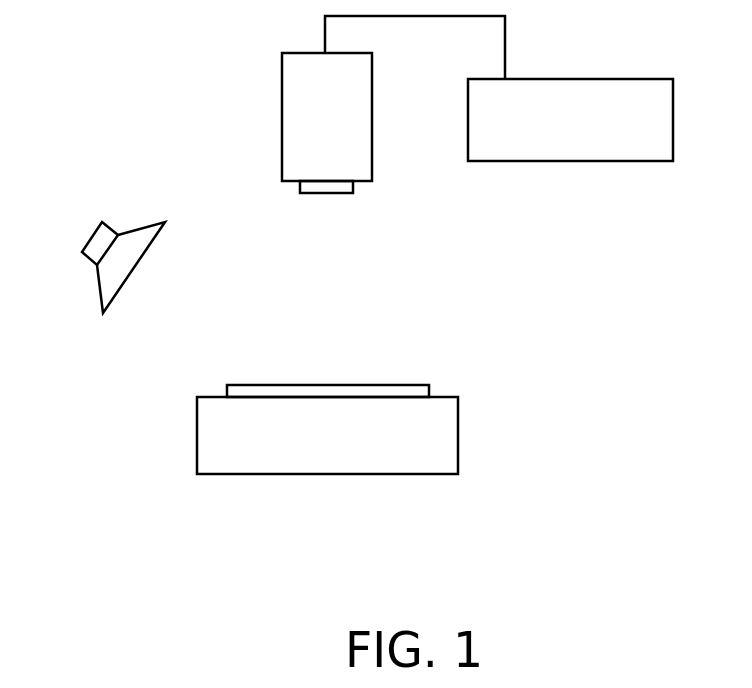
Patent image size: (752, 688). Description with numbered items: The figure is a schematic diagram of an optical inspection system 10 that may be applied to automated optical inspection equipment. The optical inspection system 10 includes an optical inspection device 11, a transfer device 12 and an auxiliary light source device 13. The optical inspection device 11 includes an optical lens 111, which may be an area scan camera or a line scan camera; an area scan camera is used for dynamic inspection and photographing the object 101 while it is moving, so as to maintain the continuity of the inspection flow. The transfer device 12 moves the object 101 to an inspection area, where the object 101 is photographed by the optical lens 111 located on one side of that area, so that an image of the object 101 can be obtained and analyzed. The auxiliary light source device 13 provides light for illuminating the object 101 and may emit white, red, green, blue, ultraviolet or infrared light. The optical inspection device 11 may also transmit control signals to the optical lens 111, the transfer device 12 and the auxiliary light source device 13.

The optical inspection system 10 is at (725, 572).
The optical inspection device 11 is at (568, 79).
The optical lens 111 is at (282, 113).
The transfer device 12 is at (459, 433).
The auxiliary light source device 13 is at (88, 239).
The object 101 is at (420, 383).